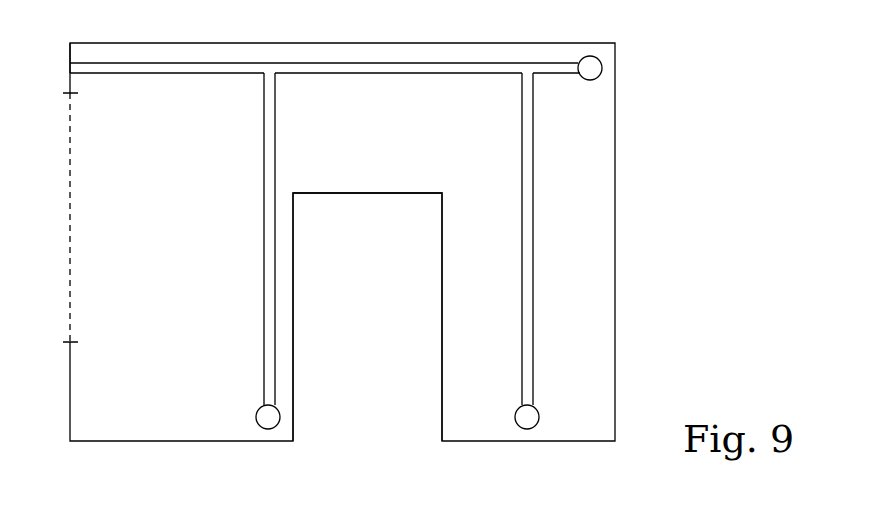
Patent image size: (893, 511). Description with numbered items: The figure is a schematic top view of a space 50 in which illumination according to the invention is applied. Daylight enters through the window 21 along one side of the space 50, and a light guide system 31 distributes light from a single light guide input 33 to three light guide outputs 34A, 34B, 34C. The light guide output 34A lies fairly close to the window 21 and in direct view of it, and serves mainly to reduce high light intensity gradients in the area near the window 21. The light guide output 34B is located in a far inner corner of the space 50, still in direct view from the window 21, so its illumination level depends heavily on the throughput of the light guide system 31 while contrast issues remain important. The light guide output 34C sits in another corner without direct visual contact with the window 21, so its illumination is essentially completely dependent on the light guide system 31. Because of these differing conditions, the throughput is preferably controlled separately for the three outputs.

The window 21 is at (68, 217).
The light guide system 31 is at (190, 68).
The light guide input 33 is at (70, 70).
The light guide output 34A is at (267, 413).
The light guide output 34B is at (597, 60).
The light guide output 34C is at (527, 413).
The space 50 is at (369, 153).